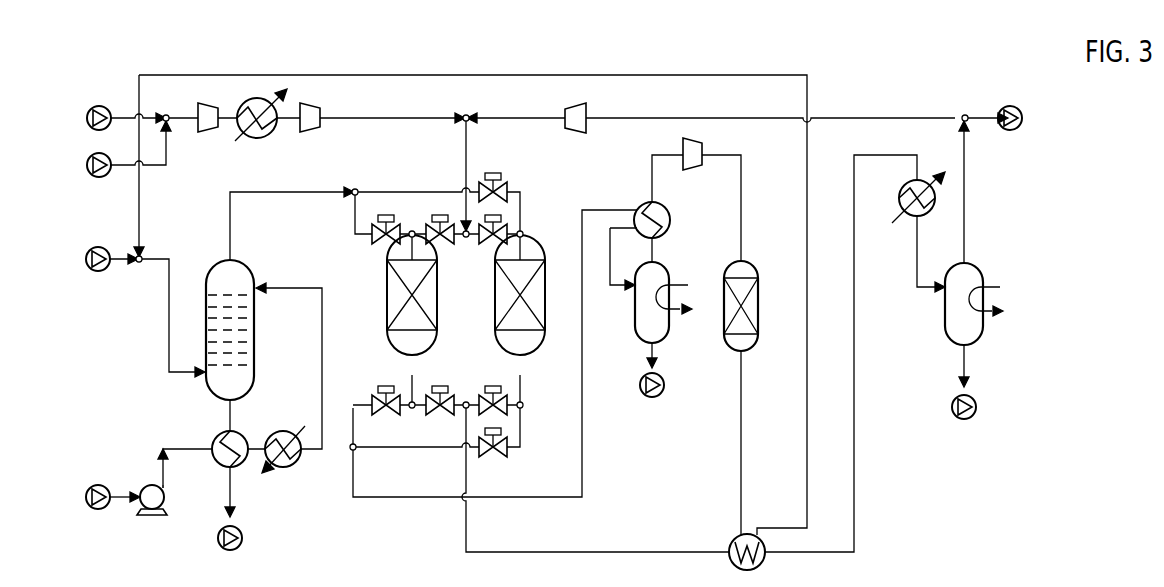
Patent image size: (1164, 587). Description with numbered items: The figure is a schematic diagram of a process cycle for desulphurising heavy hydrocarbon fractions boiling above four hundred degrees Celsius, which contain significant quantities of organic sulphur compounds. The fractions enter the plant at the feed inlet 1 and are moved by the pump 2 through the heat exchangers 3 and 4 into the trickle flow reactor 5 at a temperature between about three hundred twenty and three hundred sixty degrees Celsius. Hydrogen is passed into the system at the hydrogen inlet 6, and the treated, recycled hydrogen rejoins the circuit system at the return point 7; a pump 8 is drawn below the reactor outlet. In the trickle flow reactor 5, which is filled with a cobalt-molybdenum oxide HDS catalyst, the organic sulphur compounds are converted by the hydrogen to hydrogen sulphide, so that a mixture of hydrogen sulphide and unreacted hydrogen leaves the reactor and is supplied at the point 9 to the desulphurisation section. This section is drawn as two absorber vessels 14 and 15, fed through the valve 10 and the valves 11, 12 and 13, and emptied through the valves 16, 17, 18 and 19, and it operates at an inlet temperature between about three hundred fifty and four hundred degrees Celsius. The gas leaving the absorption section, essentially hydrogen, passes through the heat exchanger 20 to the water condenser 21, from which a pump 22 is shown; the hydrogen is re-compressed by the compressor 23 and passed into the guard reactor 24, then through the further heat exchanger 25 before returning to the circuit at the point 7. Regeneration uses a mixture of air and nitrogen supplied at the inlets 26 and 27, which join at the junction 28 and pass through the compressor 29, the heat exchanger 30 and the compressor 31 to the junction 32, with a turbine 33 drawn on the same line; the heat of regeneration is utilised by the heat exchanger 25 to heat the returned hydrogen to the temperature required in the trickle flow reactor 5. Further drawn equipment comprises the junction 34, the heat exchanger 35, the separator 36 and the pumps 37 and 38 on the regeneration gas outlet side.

The feed inlet 1 is at (86, 497).
The pump 2 is at (165, 500).
The heat exchanger 3 is at (216, 437).
The heat exchanger 4 is at (290, 428).
The trickle flow reactor 5 is at (256, 340).
The hydrogen inlet 6 is at (86, 260).
The hydrogen return point 7 is at (140, 263).
The pump 8 is at (243, 540).
The desulphurisation section inlet 9 is at (357, 189).
The valve 10 is at (493, 172).
The valve 11 is at (384, 244).
The valve 12 is at (440, 244).
The valve 13 is at (493, 244).
The adsorber vessel 14 is at (386, 316).
The adsorber vessel 15 is at (494, 316).
The valve 16 is at (380, 386).
The valve 17 is at (440, 386).
The valve 18 is at (488, 386).
The valve 19 is at (494, 457).
The heat exchanger 20 is at (670, 224).
The water condenser 21 is at (634, 330).
The pump 22 is at (665, 387).
The compressor 23 is at (694, 170).
The guard reactor 24 is at (722, 346).
The heat exchanger 25 is at (730, 542).
The air supply 26 is at (86, 118).
The nitrogen supply 27 is at (86, 165).
The junction 28 is at (168, 115).
The compressor 29 is at (207, 132).
The heat exchanger 30 is at (262, 138).
The compressor 31 is at (312, 132).
The junction 32 is at (468, 115).
The turbine 33 is at (580, 133).
The junction 34 is at (967, 115).
The heat exchanger 35 is at (906, 214).
The separator 36 is at (942, 322).
The pump 37 is at (950, 408).
The pump 38 is at (1010, 131).